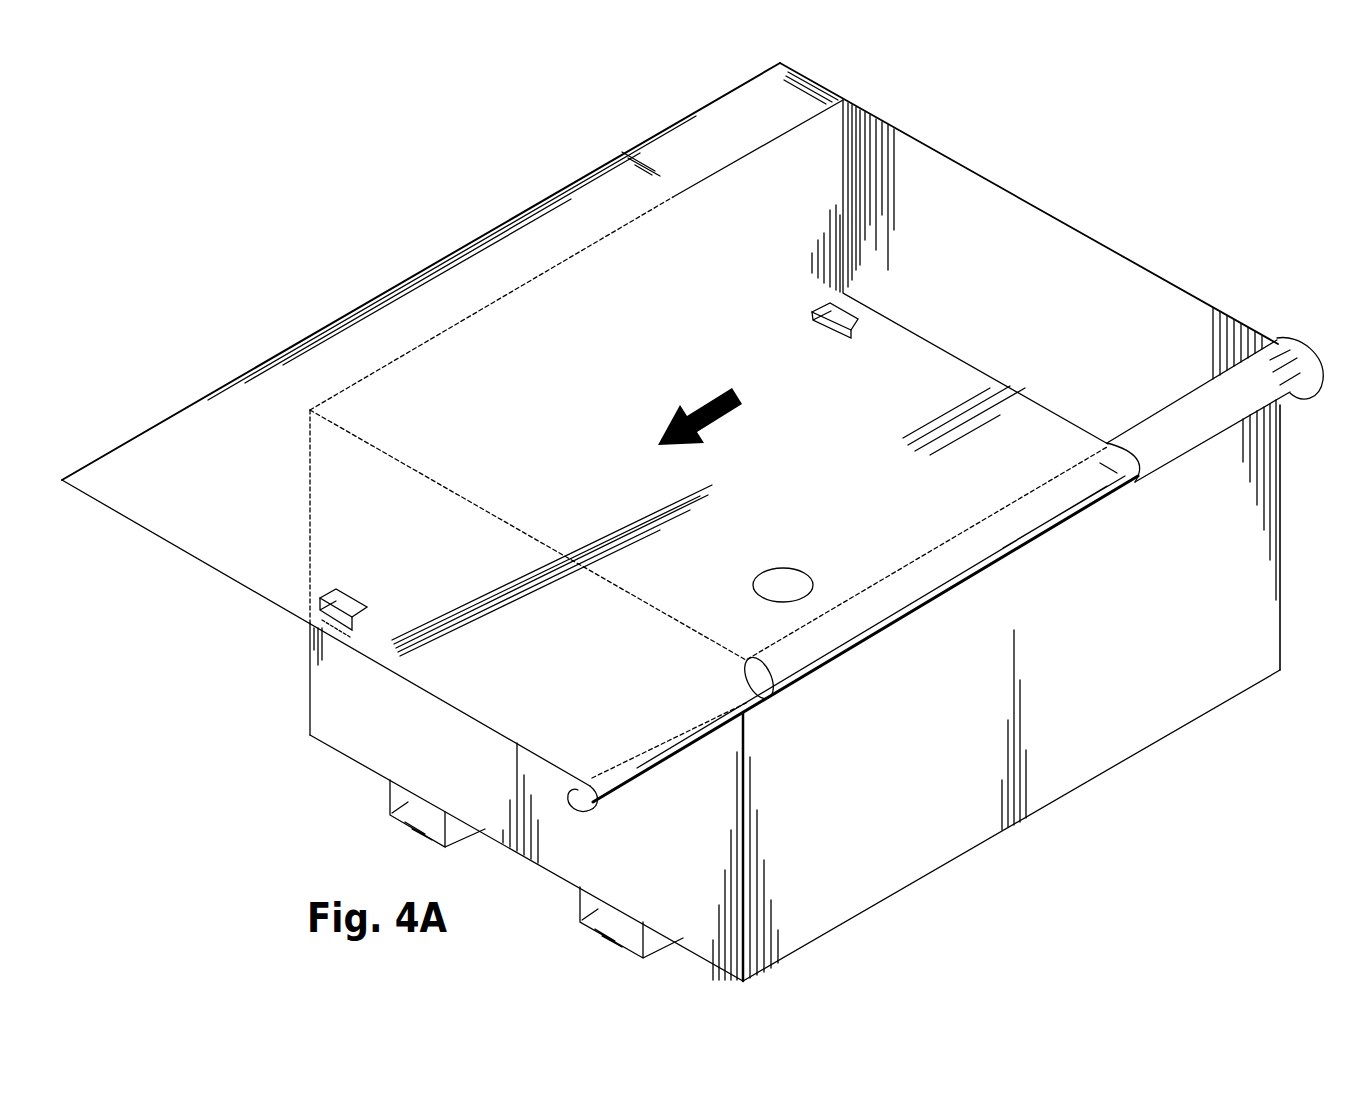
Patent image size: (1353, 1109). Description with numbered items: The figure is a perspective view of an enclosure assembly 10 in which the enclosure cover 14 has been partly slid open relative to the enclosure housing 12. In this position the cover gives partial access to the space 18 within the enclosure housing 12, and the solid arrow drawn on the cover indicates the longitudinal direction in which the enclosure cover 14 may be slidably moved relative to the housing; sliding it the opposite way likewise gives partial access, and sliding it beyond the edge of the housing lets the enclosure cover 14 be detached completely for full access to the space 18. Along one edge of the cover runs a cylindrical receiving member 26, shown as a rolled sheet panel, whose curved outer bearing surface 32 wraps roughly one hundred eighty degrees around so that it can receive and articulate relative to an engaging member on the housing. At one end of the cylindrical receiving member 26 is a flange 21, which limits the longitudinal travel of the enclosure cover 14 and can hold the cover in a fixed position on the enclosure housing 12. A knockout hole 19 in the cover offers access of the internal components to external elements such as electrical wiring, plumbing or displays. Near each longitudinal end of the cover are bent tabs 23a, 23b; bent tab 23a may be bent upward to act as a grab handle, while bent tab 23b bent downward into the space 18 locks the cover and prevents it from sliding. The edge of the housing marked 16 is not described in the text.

The enclosure assembly 10 is at (345, 256).
The enclosure housing 12 is at (1218, 541).
The enclosure cover 14 is at (183, 440).
The front edge 16 is at (1003, 573).
The space 18 is at (1086, 287).
The knockout hole 19 is at (790, 583).
The flange 21 is at (1300, 334).
The bent tab 23a is at (827, 328).
The bent tab 23b is at (347, 594).
The cylindrical receiving member 26 is at (1210, 410).
The curved outer bearing surface 32 is at (1183, 448).